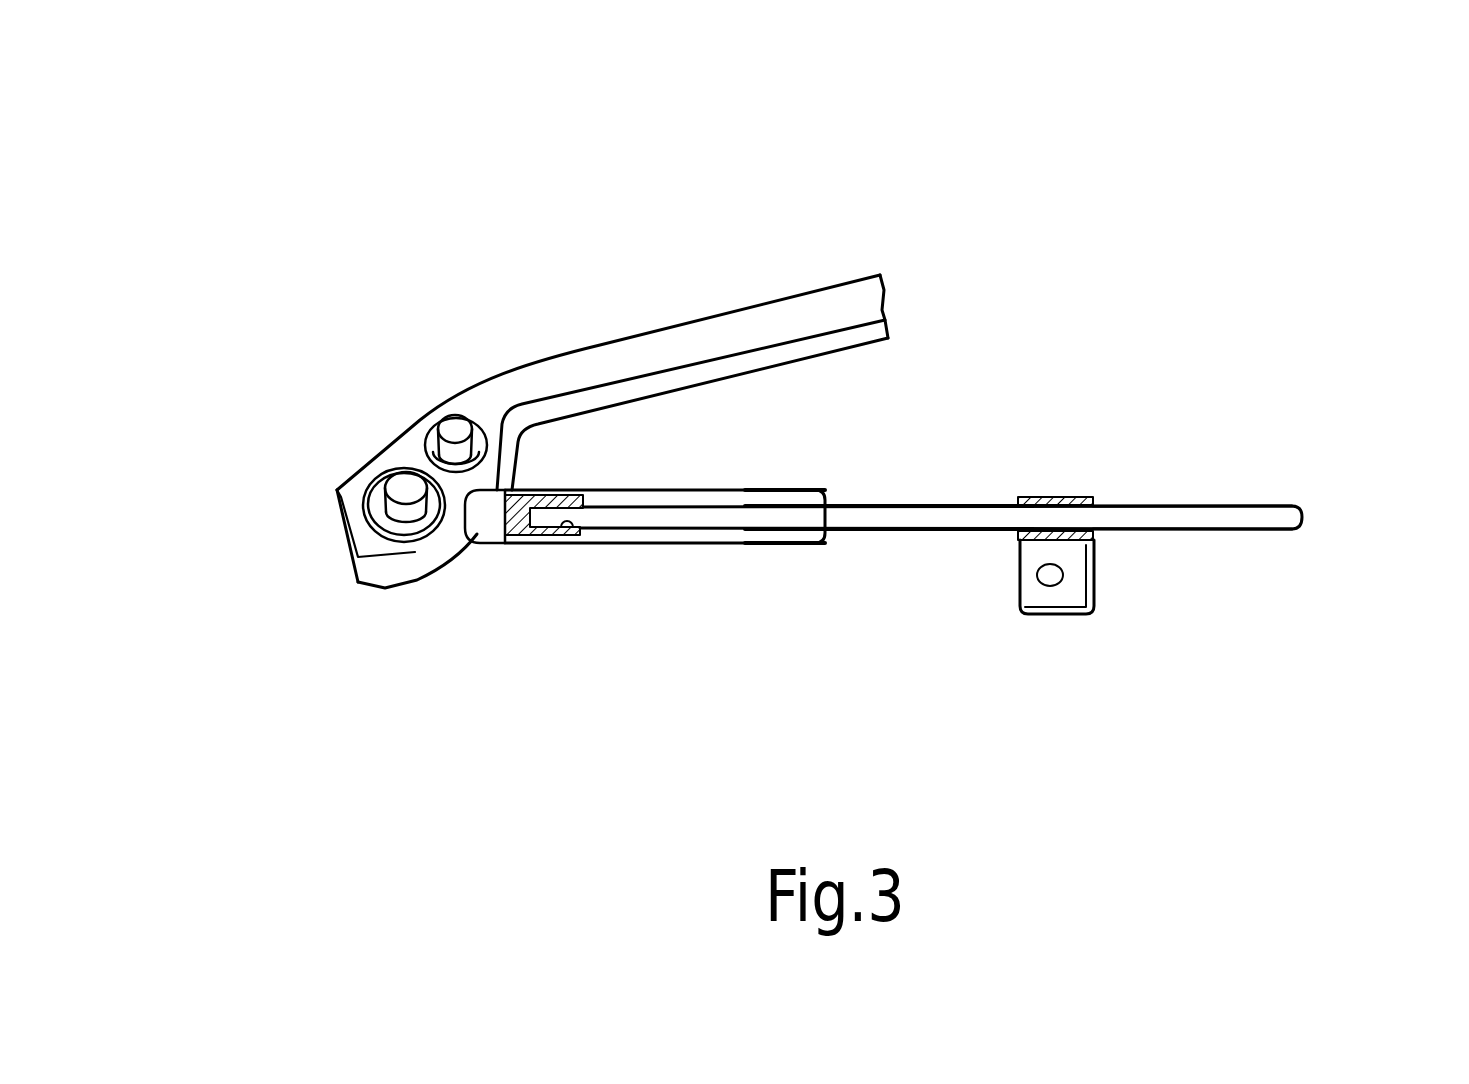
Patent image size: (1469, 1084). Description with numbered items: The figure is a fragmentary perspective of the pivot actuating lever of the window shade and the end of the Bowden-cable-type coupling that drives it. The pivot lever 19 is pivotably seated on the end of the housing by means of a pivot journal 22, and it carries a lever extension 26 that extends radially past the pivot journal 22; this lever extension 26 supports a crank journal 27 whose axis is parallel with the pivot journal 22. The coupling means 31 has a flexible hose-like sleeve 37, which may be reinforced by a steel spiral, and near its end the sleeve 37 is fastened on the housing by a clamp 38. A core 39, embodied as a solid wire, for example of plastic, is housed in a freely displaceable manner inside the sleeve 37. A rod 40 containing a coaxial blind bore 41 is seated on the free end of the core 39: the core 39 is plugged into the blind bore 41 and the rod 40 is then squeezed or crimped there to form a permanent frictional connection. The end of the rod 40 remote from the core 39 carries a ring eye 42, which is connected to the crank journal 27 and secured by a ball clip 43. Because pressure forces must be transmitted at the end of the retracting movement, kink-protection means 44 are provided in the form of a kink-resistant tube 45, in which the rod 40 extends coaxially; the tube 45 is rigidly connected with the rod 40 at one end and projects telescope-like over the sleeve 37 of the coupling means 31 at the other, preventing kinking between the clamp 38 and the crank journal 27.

The pivot lever 19 is at (705, 342).
The pivot journal 22 is at (457, 427).
The lever extension 26 is at (410, 448).
The crank journal 27 is at (345, 511).
The coupling means 31 is at (1275, 440).
The flexible sleeve 37 is at (1220, 548).
The clamp 38 is at (1058, 583).
The core 39 is at (965, 520).
The rod 40 is at (530, 545).
The blind bore 41 is at (572, 532).
The ring eye 42 is at (407, 540).
The ball clip 43 is at (350, 514).
The kink-protection means 44 is at (748, 622).
The kink-resistant tube 45 is at (712, 490).